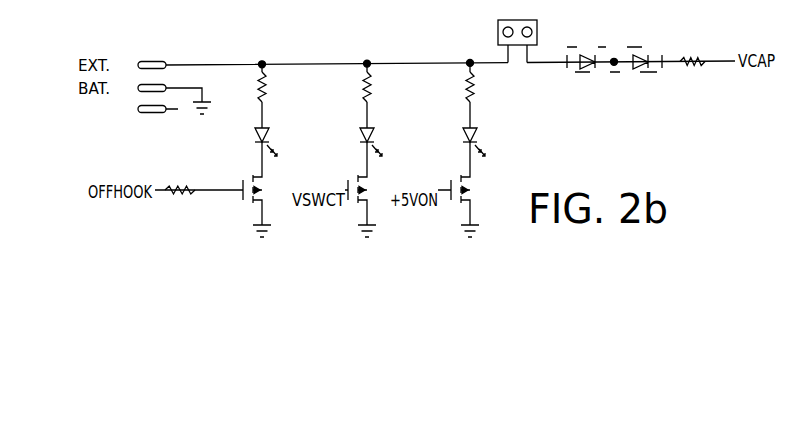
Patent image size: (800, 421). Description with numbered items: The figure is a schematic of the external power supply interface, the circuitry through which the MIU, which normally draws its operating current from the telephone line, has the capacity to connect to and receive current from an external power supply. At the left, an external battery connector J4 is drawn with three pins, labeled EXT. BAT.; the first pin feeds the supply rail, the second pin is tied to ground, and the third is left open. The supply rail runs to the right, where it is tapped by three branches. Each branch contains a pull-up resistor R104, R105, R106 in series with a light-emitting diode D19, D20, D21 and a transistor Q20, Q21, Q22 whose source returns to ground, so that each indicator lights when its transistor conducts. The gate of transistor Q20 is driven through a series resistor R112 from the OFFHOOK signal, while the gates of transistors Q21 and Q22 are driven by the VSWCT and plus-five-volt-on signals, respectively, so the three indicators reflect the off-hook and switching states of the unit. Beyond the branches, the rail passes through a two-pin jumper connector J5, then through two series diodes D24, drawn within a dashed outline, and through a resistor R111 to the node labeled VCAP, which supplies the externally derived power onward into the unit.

The external battery connector J4 is at (169, 81).
The jumper connector J5 is at (517, 31).
The resistor R104 is at (281, 94).
The resistor R105 is at (386, 94).
The resistor R106 is at (489, 93).
The resistor R111 is at (694, 49).
The resistor R112 is at (177, 181).
The light emitting diode D19 is at (278, 142).
The light emitting diode D20 is at (385, 142).
The light emitting diode D21 is at (489, 142).
The diode pair D24 is at (614, 49).
The transistor Q20 is at (269, 189).
The transistor Q21 is at (374, 189).
The transistor Q22 is at (478, 189).